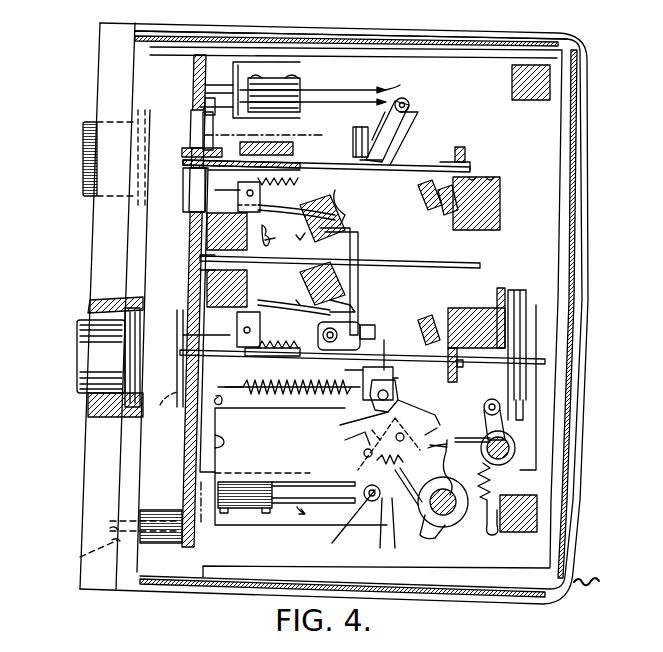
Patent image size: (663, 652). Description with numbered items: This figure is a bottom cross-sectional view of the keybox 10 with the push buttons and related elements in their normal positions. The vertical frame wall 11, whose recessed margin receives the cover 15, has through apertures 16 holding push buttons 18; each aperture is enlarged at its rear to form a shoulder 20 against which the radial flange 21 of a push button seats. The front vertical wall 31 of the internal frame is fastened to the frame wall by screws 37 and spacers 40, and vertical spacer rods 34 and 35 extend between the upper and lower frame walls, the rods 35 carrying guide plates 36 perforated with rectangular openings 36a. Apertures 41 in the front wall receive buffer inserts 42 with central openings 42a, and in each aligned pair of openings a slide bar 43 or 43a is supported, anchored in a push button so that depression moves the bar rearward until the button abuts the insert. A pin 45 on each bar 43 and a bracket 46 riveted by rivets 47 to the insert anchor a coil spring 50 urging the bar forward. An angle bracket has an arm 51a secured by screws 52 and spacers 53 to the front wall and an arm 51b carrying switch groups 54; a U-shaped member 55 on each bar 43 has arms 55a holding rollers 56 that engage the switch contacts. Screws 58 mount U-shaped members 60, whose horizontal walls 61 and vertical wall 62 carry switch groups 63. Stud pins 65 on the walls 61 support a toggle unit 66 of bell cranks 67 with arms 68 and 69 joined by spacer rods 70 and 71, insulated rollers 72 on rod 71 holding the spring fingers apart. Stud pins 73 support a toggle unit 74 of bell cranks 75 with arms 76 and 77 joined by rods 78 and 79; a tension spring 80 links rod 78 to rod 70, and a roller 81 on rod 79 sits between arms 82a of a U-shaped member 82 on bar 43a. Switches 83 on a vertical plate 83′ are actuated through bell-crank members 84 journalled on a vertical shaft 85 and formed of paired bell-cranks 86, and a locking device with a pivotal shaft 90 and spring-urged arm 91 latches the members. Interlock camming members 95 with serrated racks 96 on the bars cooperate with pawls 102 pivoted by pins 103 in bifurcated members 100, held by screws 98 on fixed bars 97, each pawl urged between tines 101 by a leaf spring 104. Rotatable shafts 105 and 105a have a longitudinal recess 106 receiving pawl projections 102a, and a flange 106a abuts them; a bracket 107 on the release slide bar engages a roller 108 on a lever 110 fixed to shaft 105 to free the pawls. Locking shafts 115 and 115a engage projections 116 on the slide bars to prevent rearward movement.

The keybox 10 is at (600, 227).
The vertical frame wall 11 is at (95, 470).
The cover 15 is at (595, 576).
The through apertures 16 is at (103, 200).
The push button 18 is at (80, 153).
The shoulder 20 is at (88, 304).
The radial flange 21 is at (128, 300).
The front vertical wall 31 is at (194, 57).
The vertical spacer rod 34 is at (524, 101).
The vertical spacer rod 35 is at (497, 210).
The guide plate 36 is at (460, 146).
The rectangular opening 36a is at (465, 158).
The screw 37 is at (84, 545).
The spacer 40 is at (158, 512).
The aperture 41 is at (201, 117).
The buffer insert 42 is at (187, 208).
The rectangular opening 42a is at (184, 152).
The push button slide bar 43 is at (448, 163).
The push button slide bar 43a is at (450, 359).
The pin 45 is at (362, 127).
The bracket 46 is at (256, 148).
The rivet 47 is at (203, 106).
The coil spring 50 is at (340, 128).
The arm of angle bracket 51a is at (274, 88).
The arm of angle bracket 51b is at (300, 116).
The screw 52 is at (224, 46).
The spacer 53 is at (263, 56).
The switch group 54 is at (376, 87).
The U-shaped member 55 is at (412, 128).
The arm of U-shaped member 55a is at (420, 114).
The roller 56 is at (412, 97).
The screw 58 is at (232, 446).
The U-shaped member 60 is at (300, 447).
The horizontal wall 61 is at (340, 477).
The vertical wall 62 is at (295, 478).
The switch group 63 is at (312, 512).
The stud pin 65 is at (352, 443).
The toggle unit 66 is at (425, 432).
The bell crank 67 is at (405, 468).
The arm of bell crank 68 is at (383, 524).
The arm of bell crank 69 is at (457, 467).
The spacer rod 70 is at (430, 446).
The spacer rod 71 is at (346, 521).
The insulated roller 72 is at (370, 503).
The stud pin 73 is at (412, 430).
The toggle unit 74 is at (416, 406).
The bell crank 75 is at (372, 430).
The arm of bell crank 76 is at (353, 422).
The arm of bell crank 77 is at (362, 453).
The spacer rod 78 is at (396, 437).
The spacer rod 79 is at (396, 395).
The coil tension spring 80 is at (412, 492).
The roller 81 is at (386, 350).
The U-shaped member 82 is at (305, 385).
The arm of U-shaped member 82a is at (395, 388).
The switch 83 is at (505, 388).
The vertical plate 83′ is at (507, 290).
The bell-crank member 84 is at (512, 424).
The vertical shaft 85 is at (513, 453).
The bell-crank 86 is at (490, 427).
The pivotal vertical shaft 90 is at (455, 522).
The arm 91 is at (440, 520).
The interlock camming member 95 is at (208, 171).
The serrated rack 96 is at (300, 185).
The vertical fixed bar 97 is at (220, 242).
The screw 98 is at (275, 285).
The bifurcated member 100 is at (340, 259).
The tine 101 is at (248, 190).
The pawl 102 is at (262, 207).
The pawl projection 102a is at (318, 197).
The pin 103 is at (244, 205).
The leaf spring 104 is at (268, 242).
The rotatable shaft 105 is at (355, 222).
The rotatable shaft 105a is at (315, 275).
The longitudinal recess 106 is at (300, 237).
The flange 106a is at (343, 222).
The bracket 107 is at (340, 330).
The roller 108 is at (365, 332).
The lever 110 is at (359, 282).
The push button locking shaft 115 is at (432, 313).
The push button locking shaft 115a is at (448, 214).
The projection 116 is at (425, 200).